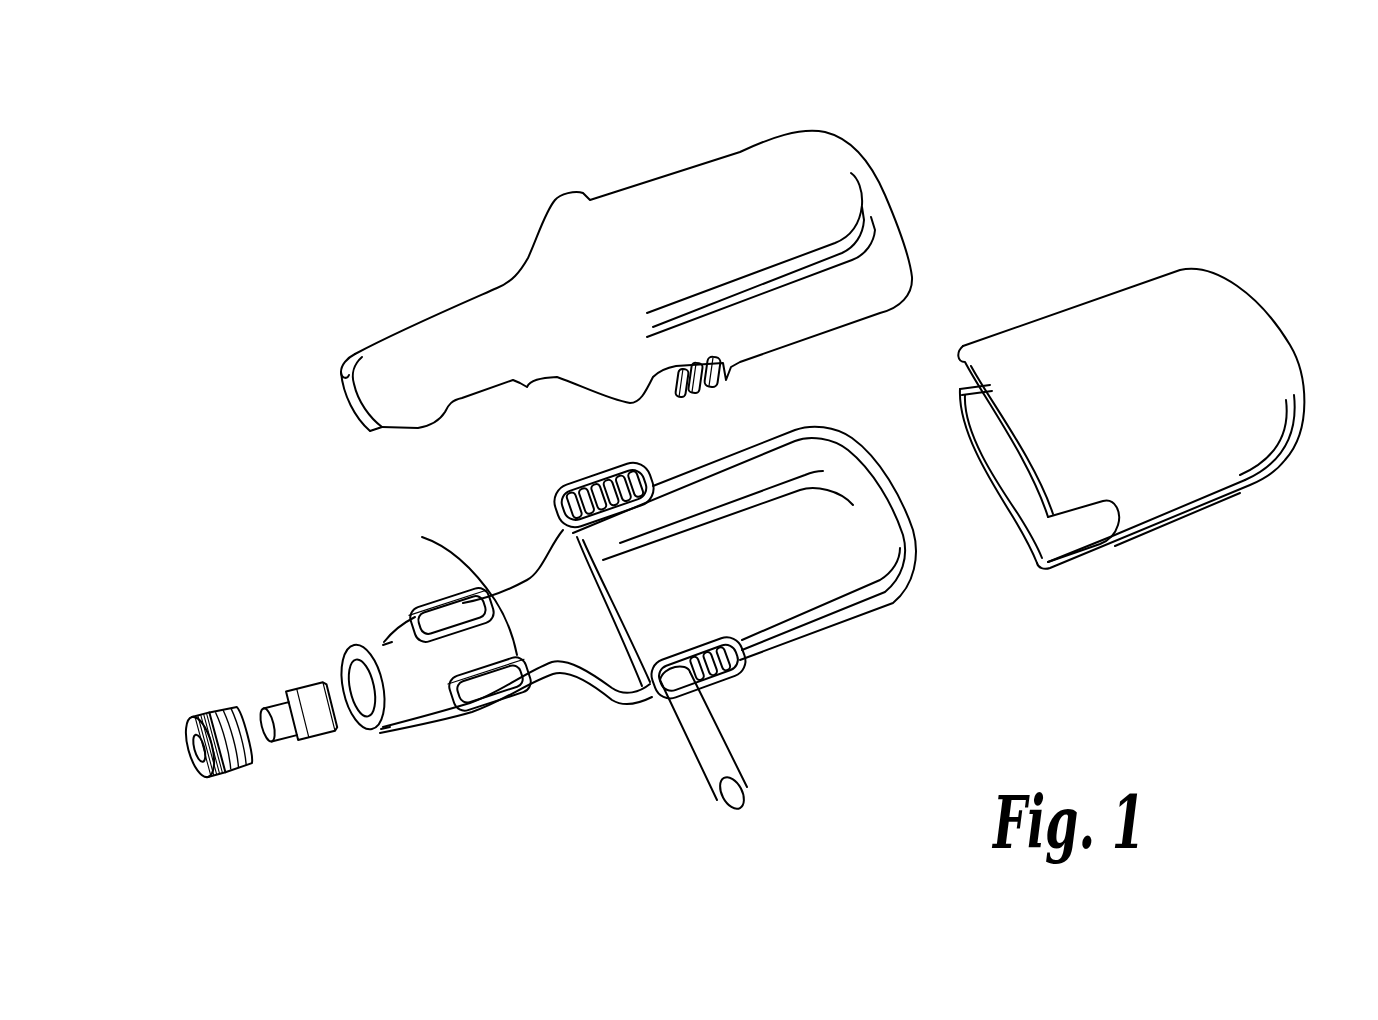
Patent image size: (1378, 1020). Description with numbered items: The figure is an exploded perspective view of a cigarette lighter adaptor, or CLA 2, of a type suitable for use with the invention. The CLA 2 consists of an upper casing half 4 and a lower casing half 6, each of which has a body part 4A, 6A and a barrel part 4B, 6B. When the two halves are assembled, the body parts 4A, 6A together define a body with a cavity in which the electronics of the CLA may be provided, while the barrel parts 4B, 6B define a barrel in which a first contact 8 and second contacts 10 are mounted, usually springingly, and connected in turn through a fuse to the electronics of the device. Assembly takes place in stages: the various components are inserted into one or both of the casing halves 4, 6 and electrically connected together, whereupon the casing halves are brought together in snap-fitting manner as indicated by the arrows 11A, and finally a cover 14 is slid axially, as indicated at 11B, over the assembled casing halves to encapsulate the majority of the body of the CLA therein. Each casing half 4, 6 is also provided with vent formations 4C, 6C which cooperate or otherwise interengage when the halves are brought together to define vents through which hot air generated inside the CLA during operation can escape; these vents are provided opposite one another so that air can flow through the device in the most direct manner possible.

The CLA 2 is at (357, 186).
The upper casing half 4 is at (605, 236).
The body part 4A is at (750, 190).
The barrel part 4B is at (413, 330).
The vent formations 4C is at (724, 381).
The lower casing half 6 is at (624, 586).
The body part 6A is at (797, 555).
The barrel part 6B is at (425, 675).
The vent formations 6C is at (590, 495).
The first contact 8 is at (320, 663).
The second contacts 10 is at (482, 592).
The arrows 11A is at (918, 73).
The arrow 11B is at (1290, 200).
The cover 14 is at (1283, 348).